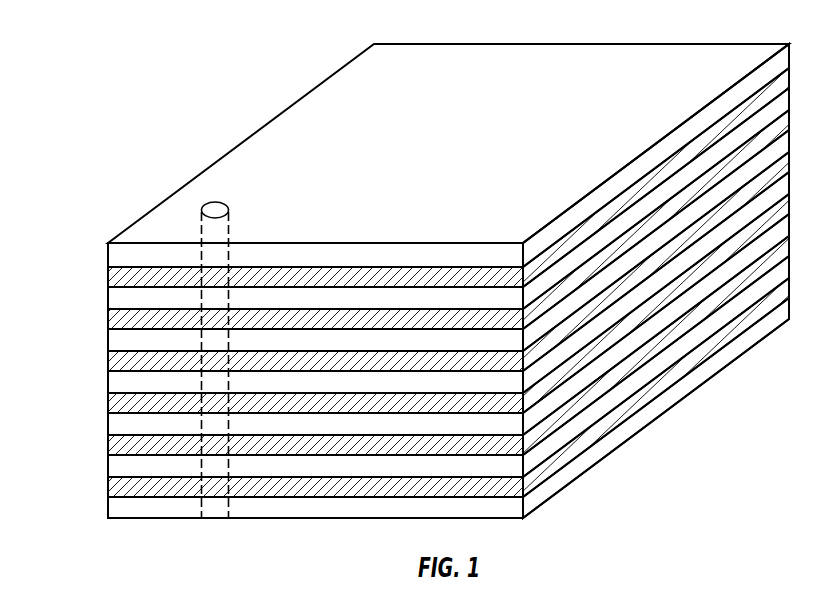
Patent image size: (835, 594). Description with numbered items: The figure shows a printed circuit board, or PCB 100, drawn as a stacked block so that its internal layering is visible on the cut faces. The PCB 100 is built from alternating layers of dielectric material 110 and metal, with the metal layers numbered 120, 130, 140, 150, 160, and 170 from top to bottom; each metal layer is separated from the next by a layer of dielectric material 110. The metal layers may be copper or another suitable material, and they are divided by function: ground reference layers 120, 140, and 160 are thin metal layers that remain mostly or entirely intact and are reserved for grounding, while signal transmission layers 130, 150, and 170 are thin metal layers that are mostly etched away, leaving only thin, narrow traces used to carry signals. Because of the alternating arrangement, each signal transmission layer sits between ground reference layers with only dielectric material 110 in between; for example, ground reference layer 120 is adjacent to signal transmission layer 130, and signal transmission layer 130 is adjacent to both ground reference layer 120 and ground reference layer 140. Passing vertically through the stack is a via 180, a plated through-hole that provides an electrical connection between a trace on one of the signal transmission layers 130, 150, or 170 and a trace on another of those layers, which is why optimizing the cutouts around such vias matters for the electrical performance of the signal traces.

The PCB 100 is at (216, 111).
The dielectric material 110 is at (108, 255).
The ground reference layer 120 is at (108, 277).
The signal transmission layer 130 is at (108, 319).
The ground reference layer 140 is at (108, 361).
The signal transmission layer 150 is at (108, 403).
The ground reference layer 160 is at (108, 445).
The signal transmission layer 170 is at (108, 487).
The via 180 is at (216, 202).